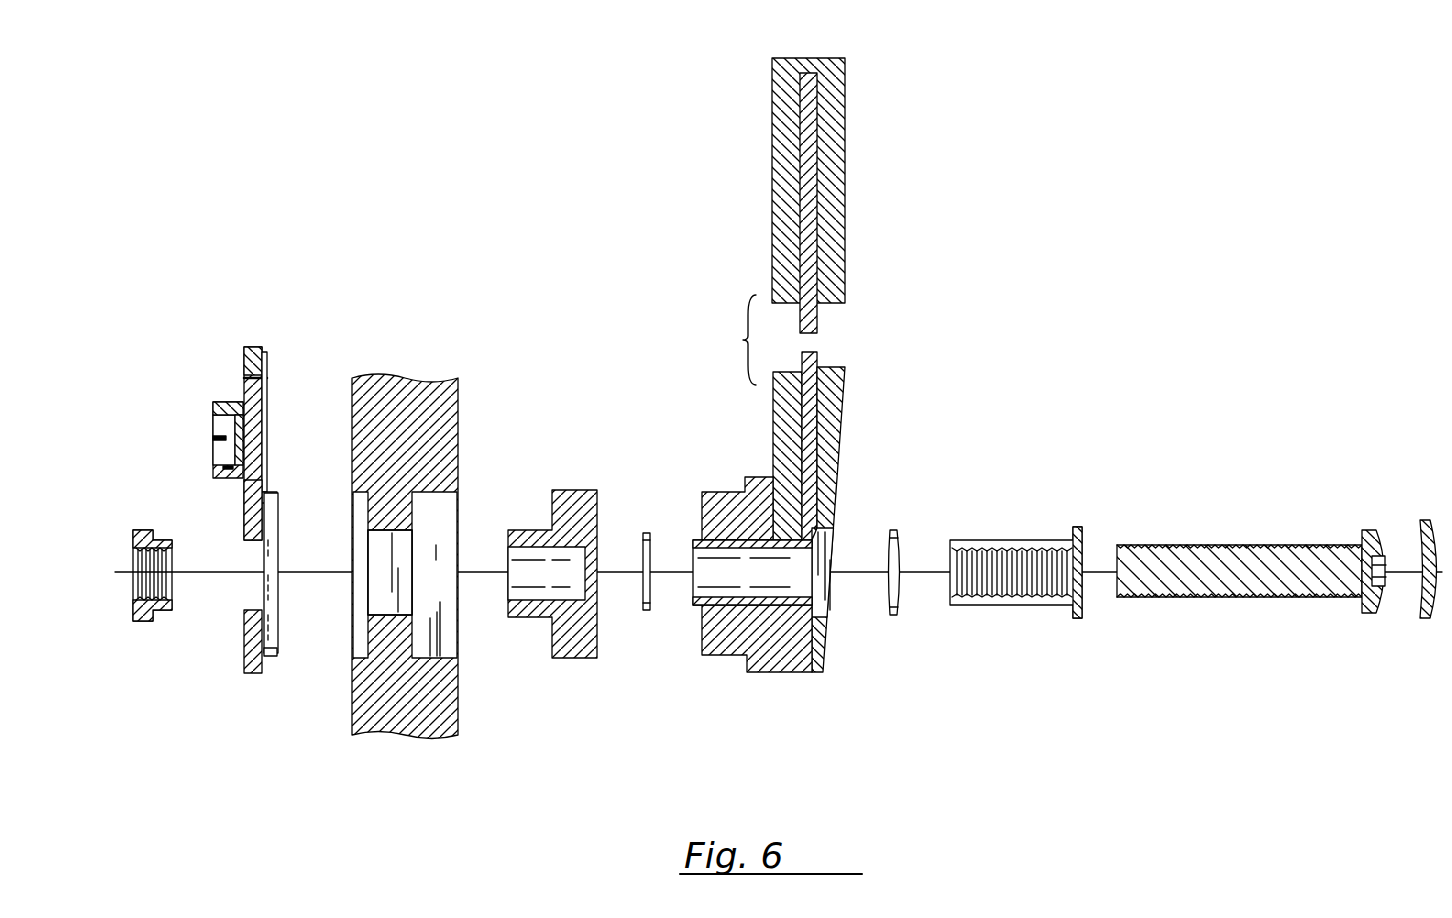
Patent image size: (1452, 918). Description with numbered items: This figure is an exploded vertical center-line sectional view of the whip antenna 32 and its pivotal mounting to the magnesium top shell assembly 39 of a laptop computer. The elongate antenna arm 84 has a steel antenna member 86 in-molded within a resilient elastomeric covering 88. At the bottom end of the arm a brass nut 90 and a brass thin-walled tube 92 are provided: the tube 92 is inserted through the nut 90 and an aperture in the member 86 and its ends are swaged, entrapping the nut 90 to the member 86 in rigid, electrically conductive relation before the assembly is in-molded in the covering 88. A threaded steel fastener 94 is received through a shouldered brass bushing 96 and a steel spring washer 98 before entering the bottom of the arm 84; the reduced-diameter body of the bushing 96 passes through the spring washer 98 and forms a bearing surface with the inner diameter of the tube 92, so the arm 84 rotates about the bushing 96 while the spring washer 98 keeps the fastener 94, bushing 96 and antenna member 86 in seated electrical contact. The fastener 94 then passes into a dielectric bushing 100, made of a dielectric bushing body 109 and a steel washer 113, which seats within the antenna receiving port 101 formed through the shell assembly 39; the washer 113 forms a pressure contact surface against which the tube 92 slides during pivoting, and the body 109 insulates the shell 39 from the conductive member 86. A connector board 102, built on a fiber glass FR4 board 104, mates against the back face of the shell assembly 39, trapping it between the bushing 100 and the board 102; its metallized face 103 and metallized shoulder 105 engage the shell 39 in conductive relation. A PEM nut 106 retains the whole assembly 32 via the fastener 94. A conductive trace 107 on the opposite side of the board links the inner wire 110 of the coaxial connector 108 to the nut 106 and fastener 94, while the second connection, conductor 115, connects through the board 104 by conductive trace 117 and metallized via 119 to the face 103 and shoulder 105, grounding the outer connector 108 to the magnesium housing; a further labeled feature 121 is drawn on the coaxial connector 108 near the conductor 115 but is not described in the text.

The whip antenna 32 is at (1440, 760).
The magnesium top shell assembly 39 is at (356, 712).
The antenna arm 84 is at (810, 391).
The steel antenna member 86 is at (810, 424).
The elastomeric covering 88 is at (847, 493).
The brass nut 90 is at (706, 630).
The thin-walled tube 92 is at (693, 604).
The threaded steel fastener 94 is at (1300, 545).
The shouldered brass bushing 96 is at (1038, 540).
The steel spring washer 98 is at (888, 602).
The dielectric bushing 100 is at (660, 400).
The antenna receiving port 101 is at (418, 551).
The connector board 102 is at (305, 290).
The metallized face 103 is at (268, 490).
The fiber glass FR4 board 104 is at (244, 357).
The metallized shoulder 105 is at (268, 656).
The PEM nut 106 is at (143, 622).
The conductive trace 107 is at (244, 518).
The coaxial connector 108 is at (171, 389).
The dielectric bushing body 109 is at (560, 503).
The inner circumferential conductor 110 is at (227, 438).
The steel washer 113 is at (648, 533).
The coaxial connector conductor 115 is at (215, 412).
The conductive trace 117 is at (245, 373).
The metallized via 119 is at (263, 378).
The rim 121 is at (216, 401).